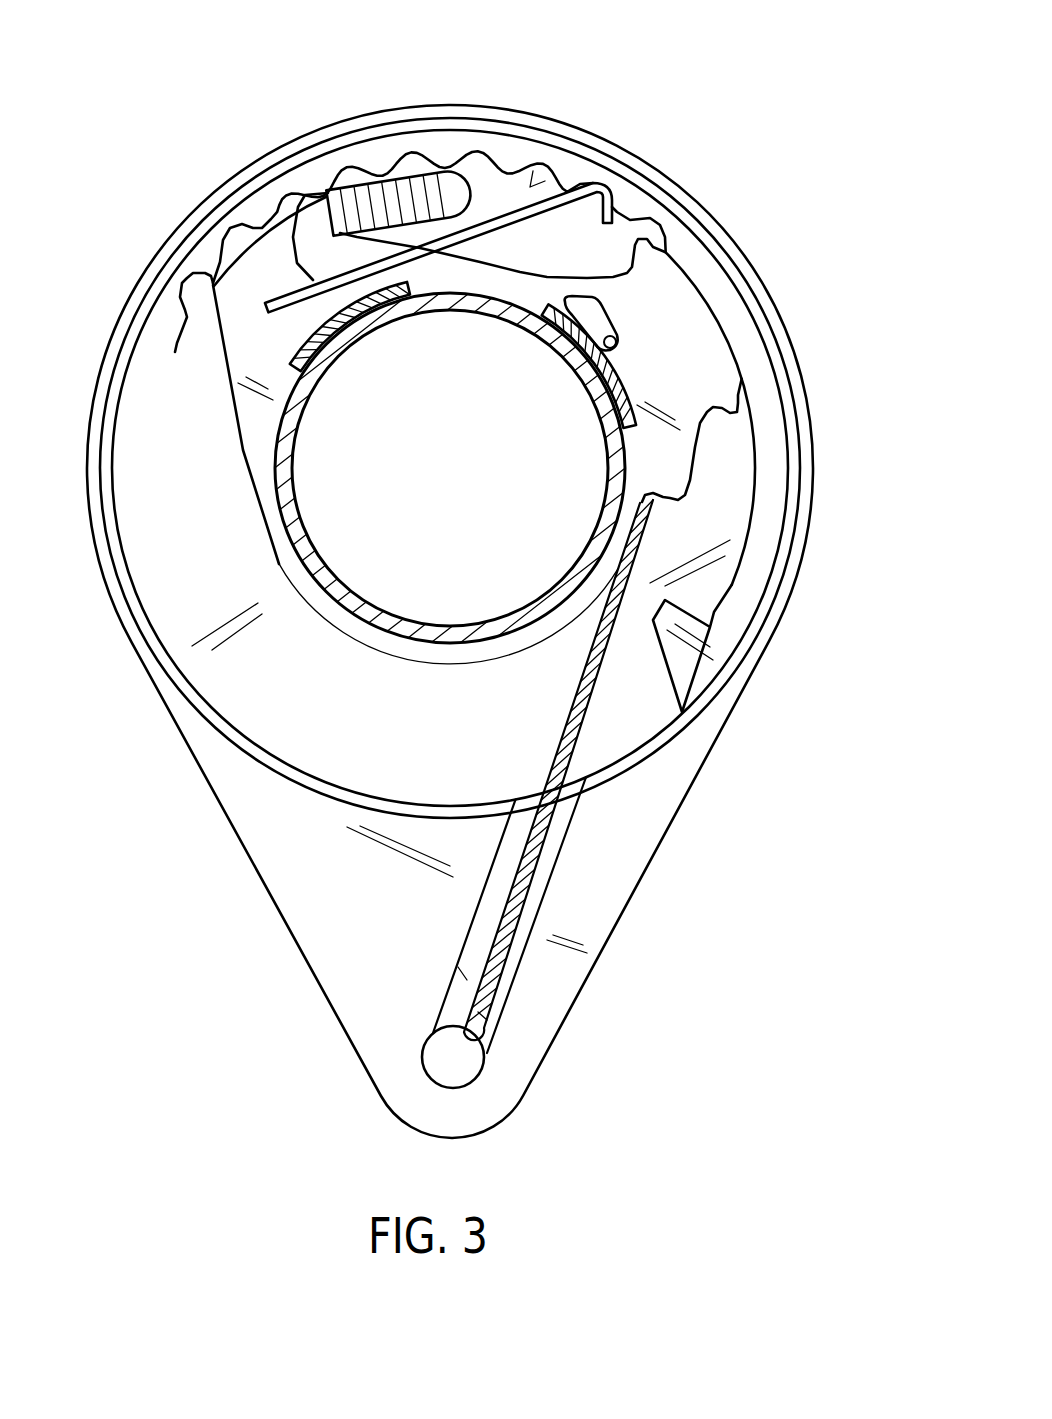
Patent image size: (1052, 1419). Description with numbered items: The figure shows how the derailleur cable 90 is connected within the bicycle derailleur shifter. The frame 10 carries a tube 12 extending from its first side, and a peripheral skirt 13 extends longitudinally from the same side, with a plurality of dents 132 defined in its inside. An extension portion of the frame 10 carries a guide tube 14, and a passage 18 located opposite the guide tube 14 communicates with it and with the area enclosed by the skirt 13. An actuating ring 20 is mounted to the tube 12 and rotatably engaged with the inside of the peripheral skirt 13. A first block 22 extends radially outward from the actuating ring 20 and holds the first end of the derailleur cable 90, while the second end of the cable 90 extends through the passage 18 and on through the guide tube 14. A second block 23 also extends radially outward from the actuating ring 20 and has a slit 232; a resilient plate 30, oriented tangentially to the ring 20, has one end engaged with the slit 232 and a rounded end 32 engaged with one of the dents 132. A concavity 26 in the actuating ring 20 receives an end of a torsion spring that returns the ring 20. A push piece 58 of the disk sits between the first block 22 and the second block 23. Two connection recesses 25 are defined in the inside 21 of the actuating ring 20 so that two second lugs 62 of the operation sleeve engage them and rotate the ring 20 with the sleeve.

The frame 10 is at (206, 847).
The tube 12 is at (380, 618).
The peripheral skirt 13 is at (732, 585).
The guide tube 14 is at (462, 1088).
The passage 18 is at (542, 917).
The actuating ring 20 is at (738, 438).
The inside of the actuating ring 21 is at (420, 648).
The first block 22 is at (628, 396).
The second block 23 is at (258, 255).
The connection recesses 25 is at (300, 347).
The concavity 26 is at (612, 318).
The resilient plate 30 is at (532, 184).
The rounded end 32 is at (607, 181).
The push piece 58 is at (431, 187).
The second lugs 62 is at (338, 348).
The derailleur cable 90 is at (640, 738).
The dents 132 is at (665, 222).
The slit 232 is at (262, 253).